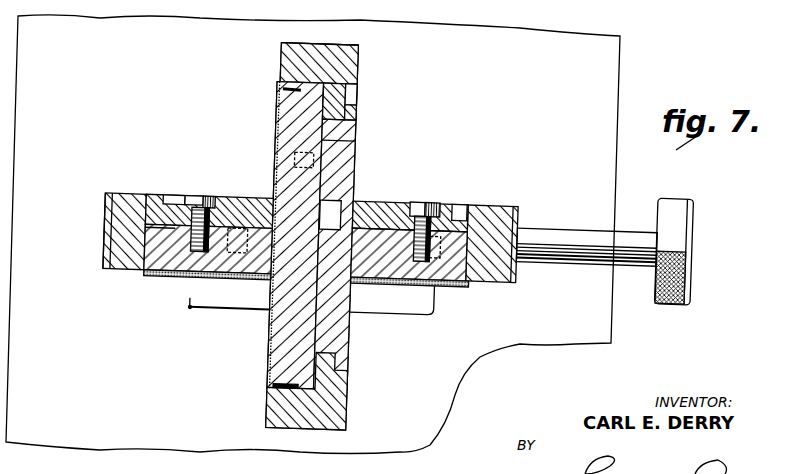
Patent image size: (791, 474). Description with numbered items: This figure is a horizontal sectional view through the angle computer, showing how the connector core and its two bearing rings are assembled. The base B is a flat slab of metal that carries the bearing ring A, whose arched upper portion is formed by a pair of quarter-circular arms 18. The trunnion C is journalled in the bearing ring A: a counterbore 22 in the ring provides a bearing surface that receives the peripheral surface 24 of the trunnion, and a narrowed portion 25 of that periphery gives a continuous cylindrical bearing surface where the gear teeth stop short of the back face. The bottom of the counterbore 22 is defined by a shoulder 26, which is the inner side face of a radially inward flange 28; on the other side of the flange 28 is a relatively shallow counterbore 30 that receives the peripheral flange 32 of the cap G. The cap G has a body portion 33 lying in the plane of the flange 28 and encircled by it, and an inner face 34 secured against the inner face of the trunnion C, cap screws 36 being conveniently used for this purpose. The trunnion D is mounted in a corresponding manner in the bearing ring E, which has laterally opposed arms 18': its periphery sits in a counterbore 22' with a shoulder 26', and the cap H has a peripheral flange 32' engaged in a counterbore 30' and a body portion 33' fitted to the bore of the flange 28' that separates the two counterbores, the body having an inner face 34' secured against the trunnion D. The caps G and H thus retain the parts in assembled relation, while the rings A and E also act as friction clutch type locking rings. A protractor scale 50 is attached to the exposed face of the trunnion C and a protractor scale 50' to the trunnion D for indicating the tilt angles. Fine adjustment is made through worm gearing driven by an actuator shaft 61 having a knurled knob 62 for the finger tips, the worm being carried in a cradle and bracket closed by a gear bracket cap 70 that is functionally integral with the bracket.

The quarter-circular arms 18 is at (294, 248).
The laterally opposed arms 18' is at (329, 244).
The counterbore 22 is at (122, 218).
The counterbore 22' is at (267, 77).
The peripheral surface 24 is at (283, 80).
The narrowed portion 25 is at (138, 270).
The shoulder 26 is at (197, 196).
The shoulder 26' is at (359, 93).
The flange 28 is at (303, 268).
The flange 28' is at (282, 235).
The counterbore 30 is at (331, 191).
The counterbore 30' is at (371, 97).
The peripheral flange 32 is at (320, 187).
The peripheral flange 32' is at (372, 116).
The body portion 33 is at (409, 206).
The body portion 33' is at (360, 134).
The inner face 34 is at (334, 214).
The inner face 34' is at (294, 136).
The cap screws 36 is at (212, 195).
The protractor scale 50 is at (230, 304).
The protractor scale 50' is at (256, 235).
The actuator shaft 61 is at (582, 240).
The knurled knob 62 is at (682, 199).
The gear bracket cap 70 is at (189, 308).
The bearing ring A is at (106, 243).
The base B is at (620, 103).
The trunnion C is at (186, 300).
The trunnion D is at (281, 383).
The bearing ring E is at (350, 400).
The cap G is at (366, 206).
The cap H is at (352, 348).